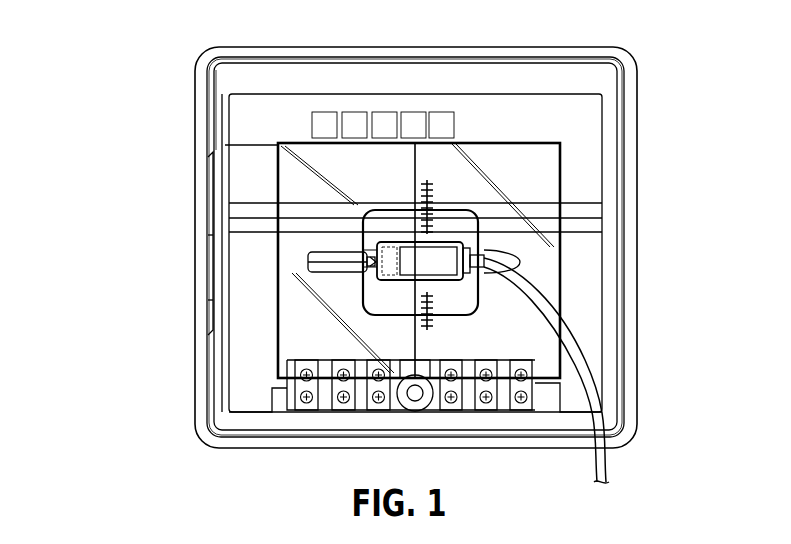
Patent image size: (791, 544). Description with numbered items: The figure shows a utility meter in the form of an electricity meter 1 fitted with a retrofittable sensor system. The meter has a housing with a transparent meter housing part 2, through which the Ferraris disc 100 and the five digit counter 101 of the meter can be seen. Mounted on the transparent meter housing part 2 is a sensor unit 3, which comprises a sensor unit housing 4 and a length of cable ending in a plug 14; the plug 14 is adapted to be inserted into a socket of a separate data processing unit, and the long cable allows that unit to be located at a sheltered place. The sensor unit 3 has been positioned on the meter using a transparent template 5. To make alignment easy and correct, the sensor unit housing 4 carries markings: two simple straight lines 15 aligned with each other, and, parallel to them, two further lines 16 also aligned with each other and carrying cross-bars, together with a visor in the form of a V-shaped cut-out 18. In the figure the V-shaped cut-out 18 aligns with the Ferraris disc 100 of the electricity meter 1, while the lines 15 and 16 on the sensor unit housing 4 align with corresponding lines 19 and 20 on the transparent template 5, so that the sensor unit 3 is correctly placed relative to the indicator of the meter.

The electricity meter 1 is at (130, 172).
The transparent meter housing part 2 is at (207, 64).
The sensor unit 3 is at (474, 208).
The sensor unit housing 4 is at (467, 296).
The transparent template 5 is at (560, 185).
The plug 14 is at (608, 467).
The straight lines 15 is at (400, 226).
The lines with cross-bars 16 is at (446, 226).
The V-shaped cut-out 18 is at (369, 266).
The template lines 19 is at (413, 343).
The template lines 20 is at (431, 330).
The Ferraris disc 100 is at (308, 258).
The five digit counter 101 is at (324, 110).